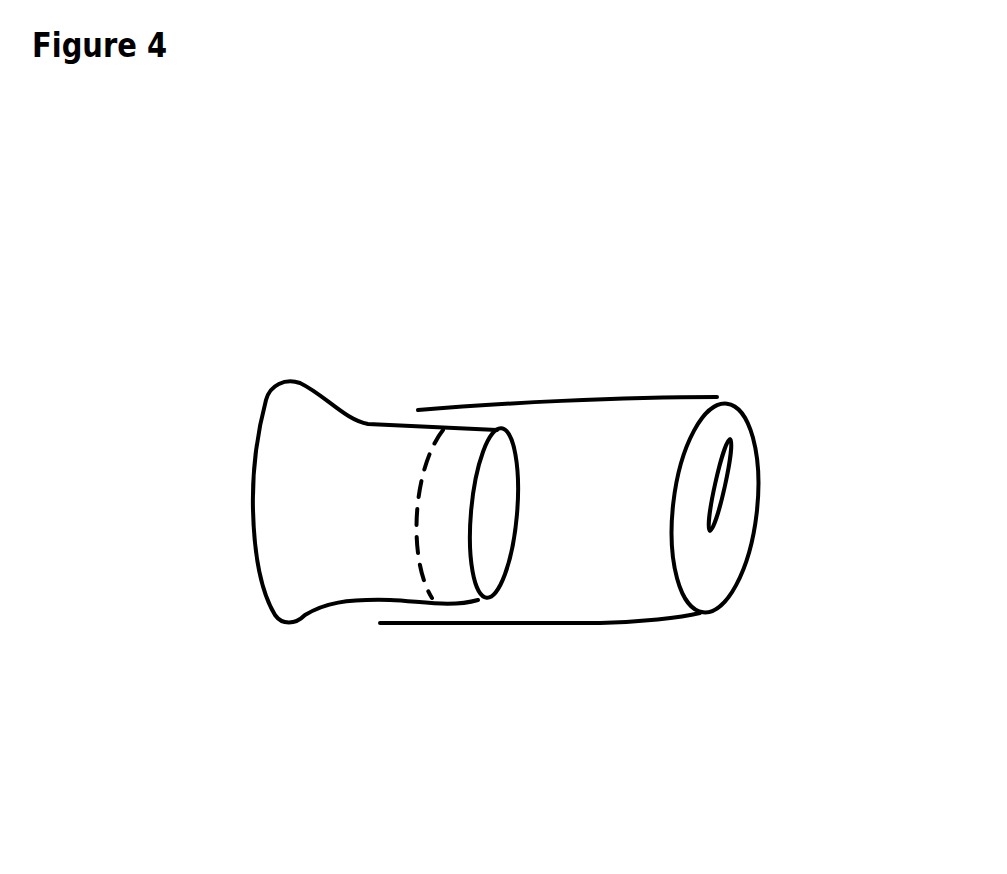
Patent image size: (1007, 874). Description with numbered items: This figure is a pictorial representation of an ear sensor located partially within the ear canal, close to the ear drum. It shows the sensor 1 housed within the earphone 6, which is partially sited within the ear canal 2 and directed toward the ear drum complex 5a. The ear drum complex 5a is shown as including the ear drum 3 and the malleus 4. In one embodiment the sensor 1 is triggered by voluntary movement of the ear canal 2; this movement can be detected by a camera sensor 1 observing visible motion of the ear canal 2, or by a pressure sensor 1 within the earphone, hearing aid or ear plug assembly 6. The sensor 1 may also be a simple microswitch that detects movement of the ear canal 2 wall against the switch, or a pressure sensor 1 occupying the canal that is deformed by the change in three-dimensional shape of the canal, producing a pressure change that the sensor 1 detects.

The sensor 1 is at (465, 420).
The ear canal 2 is at (575, 643).
The ear drum 3 is at (772, 538).
The malleus 4 is at (740, 483).
The ear drum complex 5a is at (860, 421).
The earphone 6 is at (237, 543).